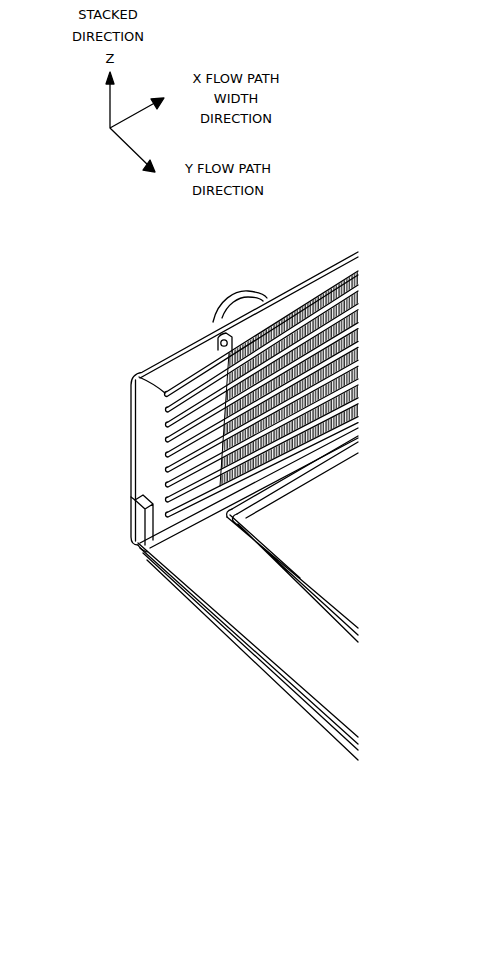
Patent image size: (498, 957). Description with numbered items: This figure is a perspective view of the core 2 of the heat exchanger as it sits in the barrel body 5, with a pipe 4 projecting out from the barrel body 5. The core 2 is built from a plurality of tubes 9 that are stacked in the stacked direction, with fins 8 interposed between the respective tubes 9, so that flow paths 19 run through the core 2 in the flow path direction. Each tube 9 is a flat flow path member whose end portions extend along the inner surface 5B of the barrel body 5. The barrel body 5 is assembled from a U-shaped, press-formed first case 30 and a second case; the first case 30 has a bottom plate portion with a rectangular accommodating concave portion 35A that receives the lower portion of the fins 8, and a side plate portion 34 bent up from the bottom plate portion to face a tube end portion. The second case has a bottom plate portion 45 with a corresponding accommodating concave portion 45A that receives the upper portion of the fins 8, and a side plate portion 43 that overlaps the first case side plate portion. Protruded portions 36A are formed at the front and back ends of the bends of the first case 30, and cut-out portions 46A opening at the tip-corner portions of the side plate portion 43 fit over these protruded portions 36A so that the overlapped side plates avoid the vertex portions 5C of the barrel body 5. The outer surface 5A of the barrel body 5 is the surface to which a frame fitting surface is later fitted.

The core 2 is at (337, 278).
The fin 8 is at (353, 280).
The flow path 19 is at (307, 303).
The pipe 4 is at (215, 320).
The barrel body 5 is at (129, 397).
The outer surface 5A is at (184, 527).
The inner surface 5B is at (143, 467).
The vertex portion 5C is at (136, 375).
The tube 9 is at (172, 450).
The side plate portion 34 is at (163, 426).
The first case 30 is at (142, 557).
The accommodating concave portion 35A is at (270, 560).
The protruded portion 36A is at (133, 530).
The side plate portion 43 is at (187, 603).
The bottom plate portion 45 is at (155, 358).
The accommodating concave portion 45A is at (227, 347).
The cut-out portion 46A is at (132, 498).